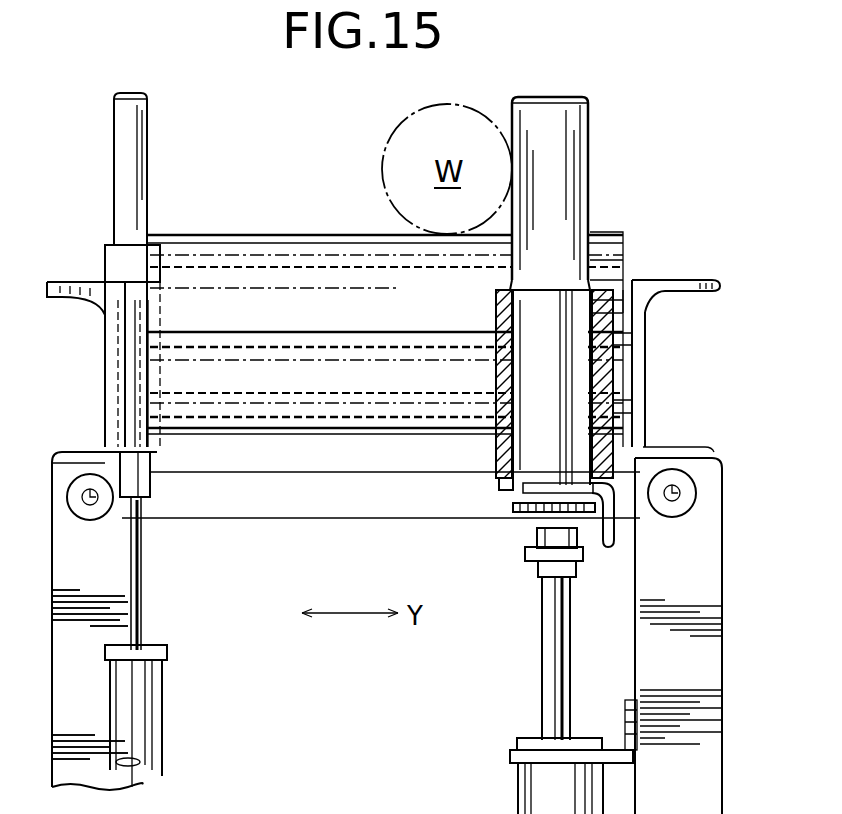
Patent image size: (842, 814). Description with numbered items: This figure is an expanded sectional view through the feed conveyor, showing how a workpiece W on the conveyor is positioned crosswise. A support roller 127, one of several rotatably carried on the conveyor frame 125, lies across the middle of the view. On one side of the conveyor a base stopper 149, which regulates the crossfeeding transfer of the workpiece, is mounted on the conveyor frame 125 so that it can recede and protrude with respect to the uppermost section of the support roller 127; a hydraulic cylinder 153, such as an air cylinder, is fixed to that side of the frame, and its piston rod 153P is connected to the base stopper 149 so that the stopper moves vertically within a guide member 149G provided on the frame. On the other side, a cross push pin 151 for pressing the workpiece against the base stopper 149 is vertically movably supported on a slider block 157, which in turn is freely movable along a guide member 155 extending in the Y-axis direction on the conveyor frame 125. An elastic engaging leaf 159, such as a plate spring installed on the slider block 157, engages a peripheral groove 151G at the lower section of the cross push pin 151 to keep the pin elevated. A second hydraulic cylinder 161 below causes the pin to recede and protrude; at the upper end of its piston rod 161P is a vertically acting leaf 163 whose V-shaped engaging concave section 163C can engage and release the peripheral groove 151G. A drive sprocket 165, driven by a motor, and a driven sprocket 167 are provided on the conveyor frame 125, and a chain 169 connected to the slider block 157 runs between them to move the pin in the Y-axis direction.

The conveyor frame 125 is at (668, 282).
The support roller 127 is at (292, 235).
The base stopper 149 is at (137, 165).
The guide member 149G is at (105, 258).
The cross push pin 151 is at (583, 178).
The peripheral groove 151G is at (518, 506).
The hydraulic cylinder 153 is at (148, 702).
The piston rod 153P is at (145, 606).
The guide member 155 is at (312, 335).
The slider block 157 is at (496, 318).
The elastic engaging leaf 159 is at (506, 488).
The hydraulic cylinder 161 is at (538, 790).
The piston rod 161P is at (548, 695).
The vertically acting leaf 163 is at (620, 562).
The V-shaped engaging concave section 163C is at (628, 500).
The drive sprocket 165 is at (102, 510).
The driven sprocket 167 is at (697, 493).
The chain 169 is at (292, 522).